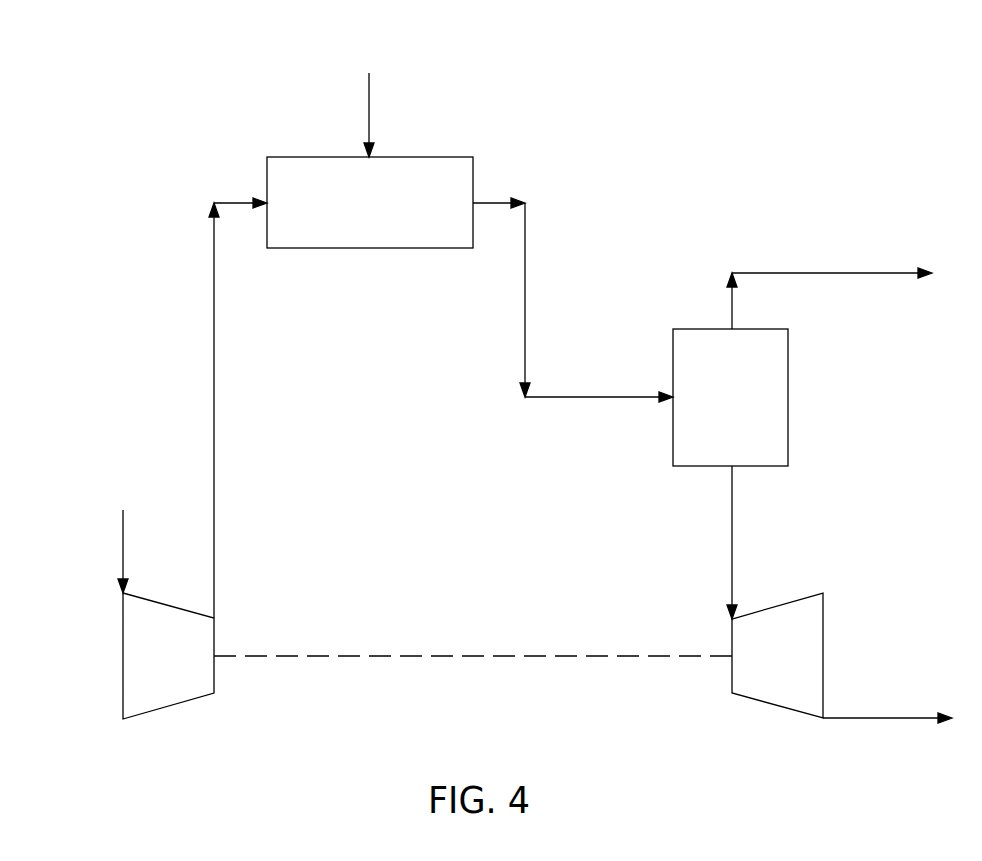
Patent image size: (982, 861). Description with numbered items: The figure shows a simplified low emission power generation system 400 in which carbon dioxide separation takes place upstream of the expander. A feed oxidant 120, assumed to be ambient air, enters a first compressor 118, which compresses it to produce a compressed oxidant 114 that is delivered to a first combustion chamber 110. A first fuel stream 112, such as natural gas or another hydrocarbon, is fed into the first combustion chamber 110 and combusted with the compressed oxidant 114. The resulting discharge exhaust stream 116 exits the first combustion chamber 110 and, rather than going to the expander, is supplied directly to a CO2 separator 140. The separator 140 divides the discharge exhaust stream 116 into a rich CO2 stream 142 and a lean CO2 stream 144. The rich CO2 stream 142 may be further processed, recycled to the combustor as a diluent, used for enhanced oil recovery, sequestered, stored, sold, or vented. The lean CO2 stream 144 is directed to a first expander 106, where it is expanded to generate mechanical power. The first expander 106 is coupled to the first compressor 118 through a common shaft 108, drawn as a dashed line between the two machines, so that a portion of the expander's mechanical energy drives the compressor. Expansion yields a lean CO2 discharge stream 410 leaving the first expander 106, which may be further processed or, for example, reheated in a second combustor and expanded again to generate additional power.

The power generation system 400 is at (585, 50).
The first combustion chamber 110 is at (349, 219).
The first fuel stream 112 is at (368, 92).
The compressed oxidant 114 is at (215, 431).
The discharge exhaust stream 116 is at (526, 299).
The CO2 separator 140 is at (710, 412).
The rich CO2 stream 142 is at (837, 272).
The lean CO2 stream 144 is at (732, 528).
The first expander 106 is at (759, 668).
The lean CO2 discharge stream 410 is at (883, 717).
The first compressor 118 is at (139, 668).
The feed oxidant 120 is at (122, 527).
The common shaft 108 is at (467, 654).